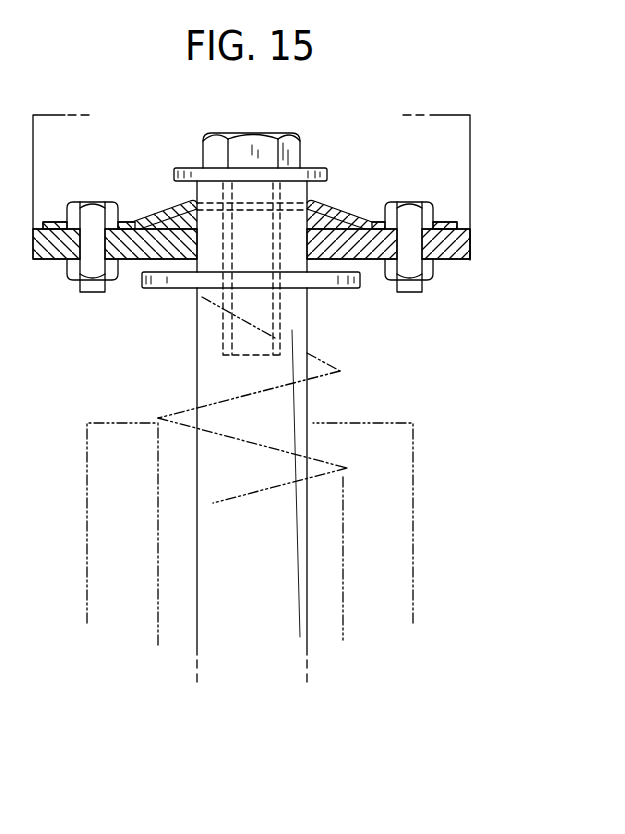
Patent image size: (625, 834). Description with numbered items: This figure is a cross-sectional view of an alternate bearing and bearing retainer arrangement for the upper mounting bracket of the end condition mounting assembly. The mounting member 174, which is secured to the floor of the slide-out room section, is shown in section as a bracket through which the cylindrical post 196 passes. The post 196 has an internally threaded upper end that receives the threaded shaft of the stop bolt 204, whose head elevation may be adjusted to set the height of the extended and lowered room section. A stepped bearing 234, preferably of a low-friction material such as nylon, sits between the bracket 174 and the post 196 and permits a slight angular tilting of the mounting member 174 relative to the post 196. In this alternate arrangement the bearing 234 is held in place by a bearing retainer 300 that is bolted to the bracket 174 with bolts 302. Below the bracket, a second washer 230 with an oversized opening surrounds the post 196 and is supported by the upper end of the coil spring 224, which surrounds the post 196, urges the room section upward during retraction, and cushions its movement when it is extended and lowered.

The mounting member 174 is at (478, 245).
The stop bolt 204 is at (216, 146).
The bearing retainer 300 is at (173, 210).
The stepped bearing 234 is at (322, 220).
The bolts 302 is at (92, 208).
The second washer 230 is at (362, 290).
The cylindrical post 196 is at (197, 355).
The coil spring 224 is at (336, 376).